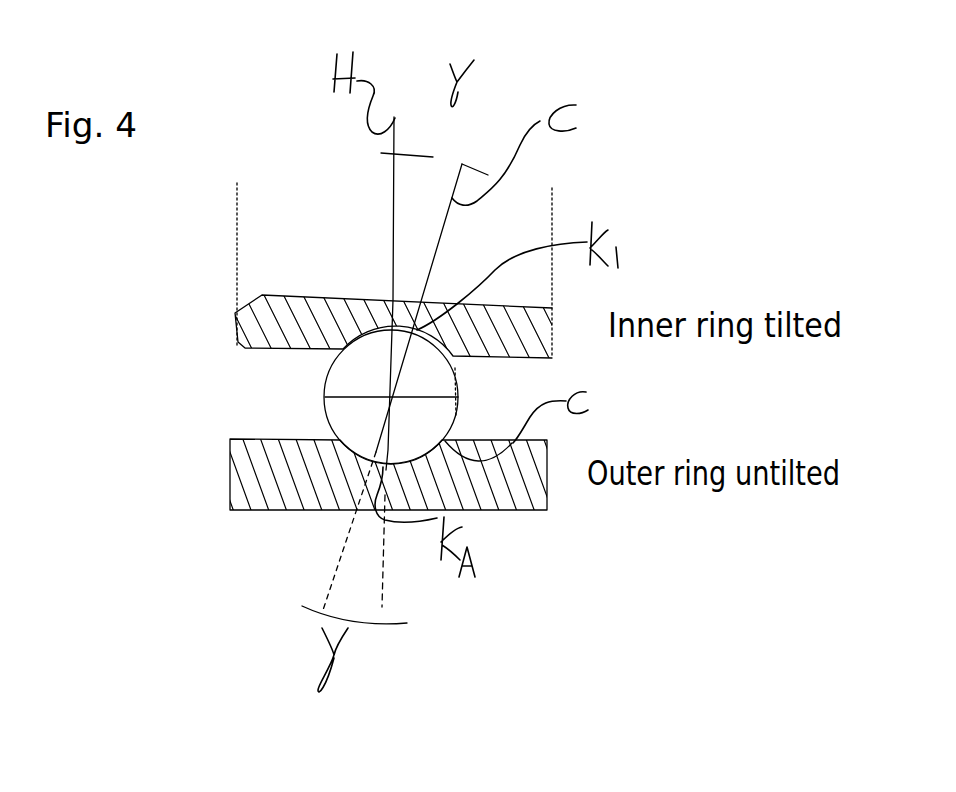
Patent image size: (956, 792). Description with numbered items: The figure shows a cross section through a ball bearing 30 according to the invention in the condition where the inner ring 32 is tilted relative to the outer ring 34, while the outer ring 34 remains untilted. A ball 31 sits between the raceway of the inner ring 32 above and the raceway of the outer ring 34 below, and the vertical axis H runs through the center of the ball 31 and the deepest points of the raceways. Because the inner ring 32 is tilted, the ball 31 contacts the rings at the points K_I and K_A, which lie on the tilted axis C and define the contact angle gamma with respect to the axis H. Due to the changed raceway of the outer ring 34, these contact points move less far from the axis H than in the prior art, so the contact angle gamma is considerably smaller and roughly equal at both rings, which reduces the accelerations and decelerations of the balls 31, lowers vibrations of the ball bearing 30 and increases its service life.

The ball bearing 30 is at (224, 406).
The ball 31 is at (445, 384).
The inner ring 32 is at (240, 339).
The outer ring 34 is at (230, 475).